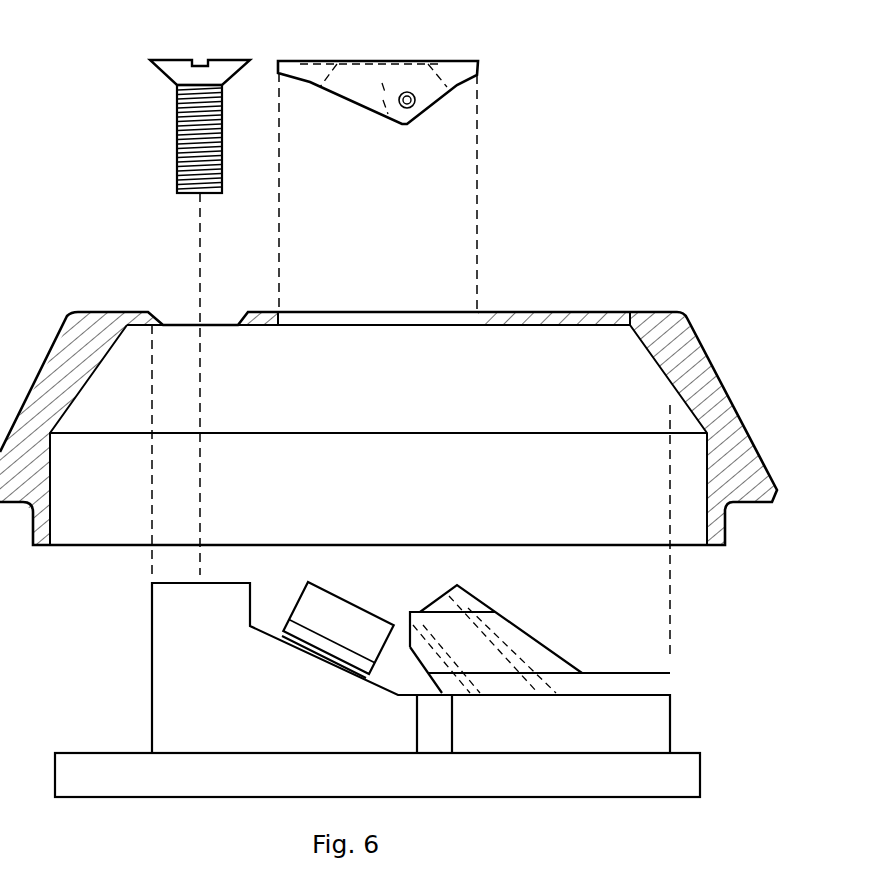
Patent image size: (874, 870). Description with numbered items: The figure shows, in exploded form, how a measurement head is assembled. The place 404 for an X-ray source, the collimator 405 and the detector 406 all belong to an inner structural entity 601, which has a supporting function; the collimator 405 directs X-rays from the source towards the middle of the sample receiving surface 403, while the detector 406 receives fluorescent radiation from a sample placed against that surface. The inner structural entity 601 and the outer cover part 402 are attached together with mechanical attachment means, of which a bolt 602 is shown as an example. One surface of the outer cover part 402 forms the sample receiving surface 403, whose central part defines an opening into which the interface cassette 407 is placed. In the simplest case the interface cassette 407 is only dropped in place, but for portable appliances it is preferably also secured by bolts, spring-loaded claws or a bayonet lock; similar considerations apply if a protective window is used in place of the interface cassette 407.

The outer cover part 402 is at (693, 350).
The sample receiving surface 403 is at (556, 311).
The place for an X-ray source 404 is at (622, 732).
The collimator 405 is at (486, 617).
The detector 406 is at (306, 601).
The interface cassette 407 is at (369, 70).
The inner structural entity 601 is at (160, 678).
The bolt 602 is at (188, 118).